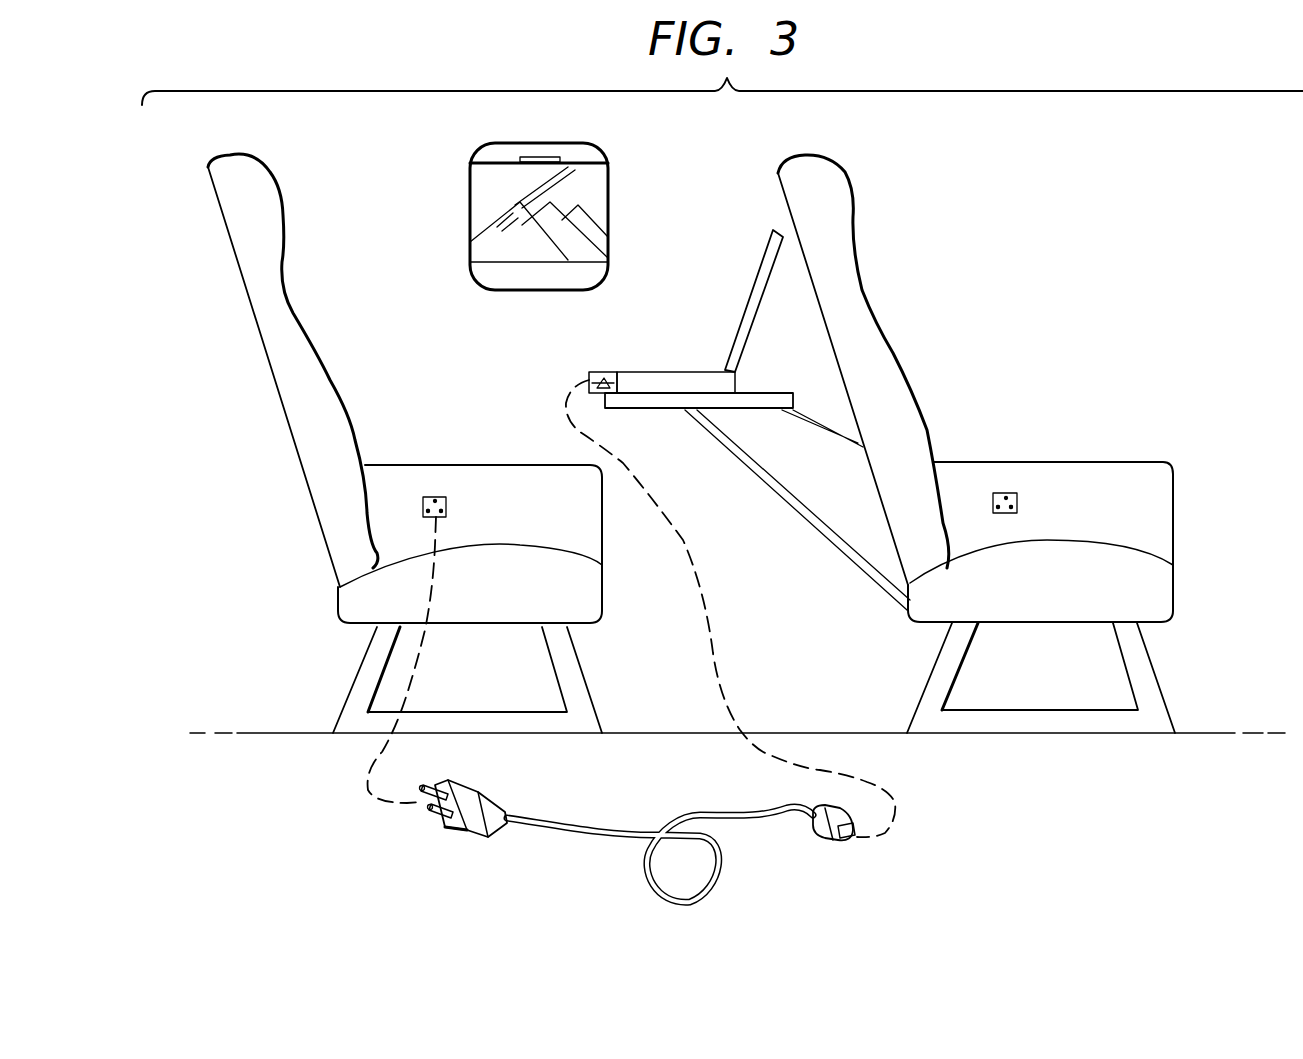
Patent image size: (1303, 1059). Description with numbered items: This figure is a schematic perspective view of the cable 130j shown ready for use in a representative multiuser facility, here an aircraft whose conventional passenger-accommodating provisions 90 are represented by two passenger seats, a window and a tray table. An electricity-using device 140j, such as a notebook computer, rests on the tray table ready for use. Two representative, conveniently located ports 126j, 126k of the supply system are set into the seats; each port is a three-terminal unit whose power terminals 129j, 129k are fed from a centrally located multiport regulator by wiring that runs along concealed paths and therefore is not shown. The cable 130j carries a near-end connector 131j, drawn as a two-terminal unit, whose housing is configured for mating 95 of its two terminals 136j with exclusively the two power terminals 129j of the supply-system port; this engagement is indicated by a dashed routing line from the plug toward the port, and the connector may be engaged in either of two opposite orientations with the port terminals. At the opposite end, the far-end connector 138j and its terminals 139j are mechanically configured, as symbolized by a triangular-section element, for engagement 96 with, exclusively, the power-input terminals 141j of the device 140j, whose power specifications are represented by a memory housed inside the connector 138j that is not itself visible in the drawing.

The passenger-accommodating provisions 90 is at (222, 163).
The engagement 95 is at (420, 663).
The engagement 96 is at (863, 780).
The port 126j is at (433, 497).
The port 126k is at (1005, 493).
The power terminals 129j is at (423, 510).
The power terminals 129k is at (1017, 507).
The cable 130j is at (617, 857).
The near-end connector 131j is at (465, 835).
The terminals 136j is at (420, 786).
The far-end connector 138j is at (823, 825).
The terminals 139j is at (843, 840).
The electricity-using device 140j is at (703, 378).
The power-input terminals 141j is at (612, 378).